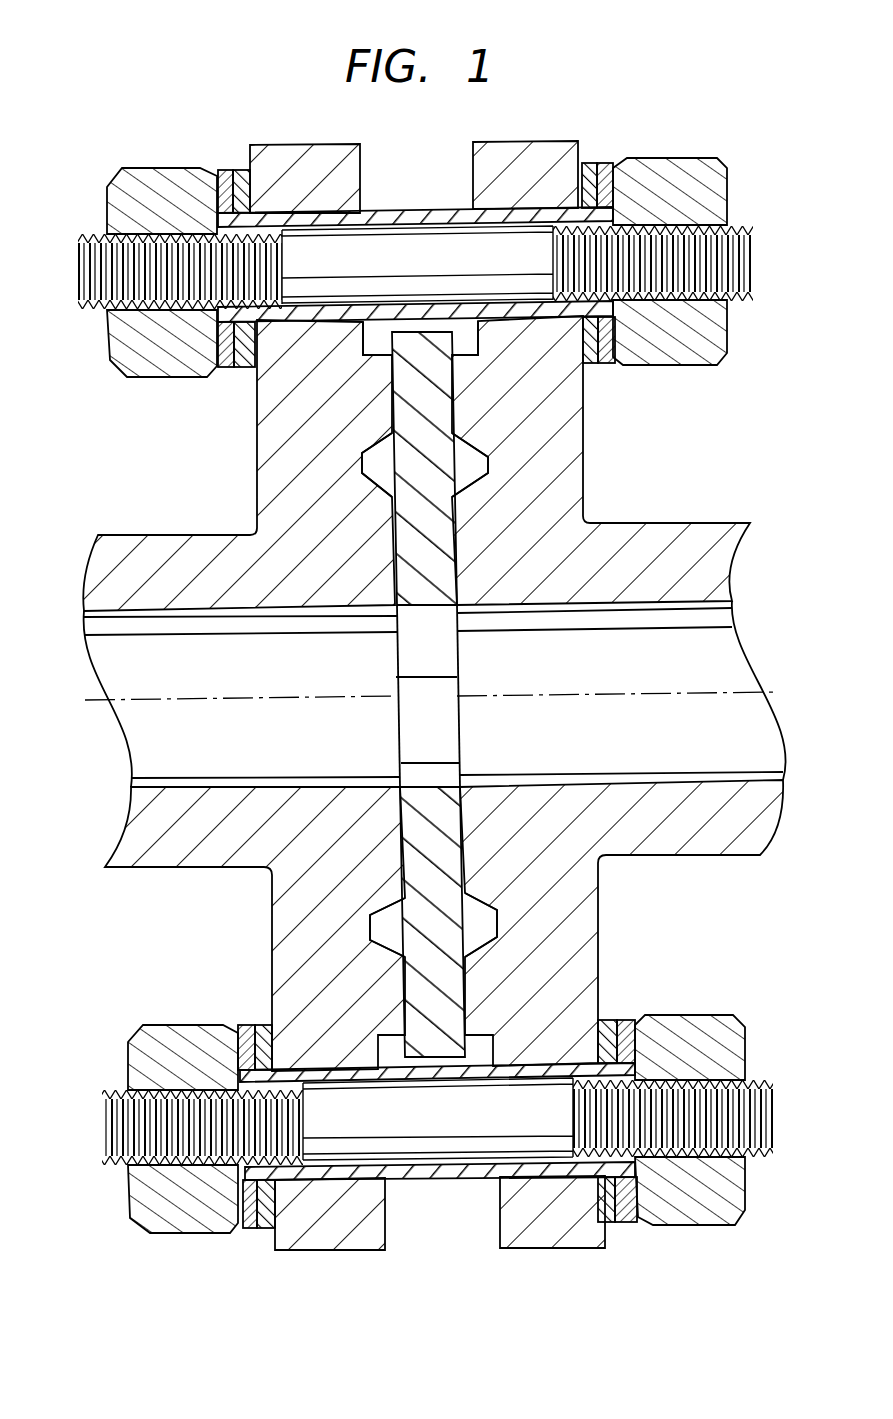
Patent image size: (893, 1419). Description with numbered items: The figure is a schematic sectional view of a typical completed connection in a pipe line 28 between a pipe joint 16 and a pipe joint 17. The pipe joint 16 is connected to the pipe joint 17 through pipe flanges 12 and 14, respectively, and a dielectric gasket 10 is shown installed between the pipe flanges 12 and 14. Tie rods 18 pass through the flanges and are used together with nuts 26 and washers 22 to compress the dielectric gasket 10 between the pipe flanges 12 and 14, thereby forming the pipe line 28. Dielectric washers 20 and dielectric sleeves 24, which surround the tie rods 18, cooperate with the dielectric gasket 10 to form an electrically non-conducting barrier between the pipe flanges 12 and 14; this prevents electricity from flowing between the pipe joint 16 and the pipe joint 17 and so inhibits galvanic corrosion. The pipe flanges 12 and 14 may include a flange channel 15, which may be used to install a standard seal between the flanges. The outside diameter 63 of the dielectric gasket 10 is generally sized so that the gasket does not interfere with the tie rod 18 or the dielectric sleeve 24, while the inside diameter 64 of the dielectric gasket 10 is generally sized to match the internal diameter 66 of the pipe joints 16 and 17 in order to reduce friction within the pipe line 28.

The pipe line 28 is at (170, 64).
The dielectric gasket 10 is at (398, 408).
The pipe flange 12 is at (257, 439).
The pipe flange 14 is at (588, 446).
The flange channel 15 is at (364, 463).
The pipe joint 16 is at (156, 868).
The pipe joint 17 is at (703, 857).
The tie rod 18 is at (78, 270).
The dielectric washer 20 is at (241, 170).
The washer 22 is at (225, 170).
The dielectric sleeve 24 is at (437, 210).
The nut 26 is at (148, 168).
The outside diameter 63 is at (420, 332).
The inside diameter 64 is at (432, 607).
The internal diameter 66 is at (152, 612).